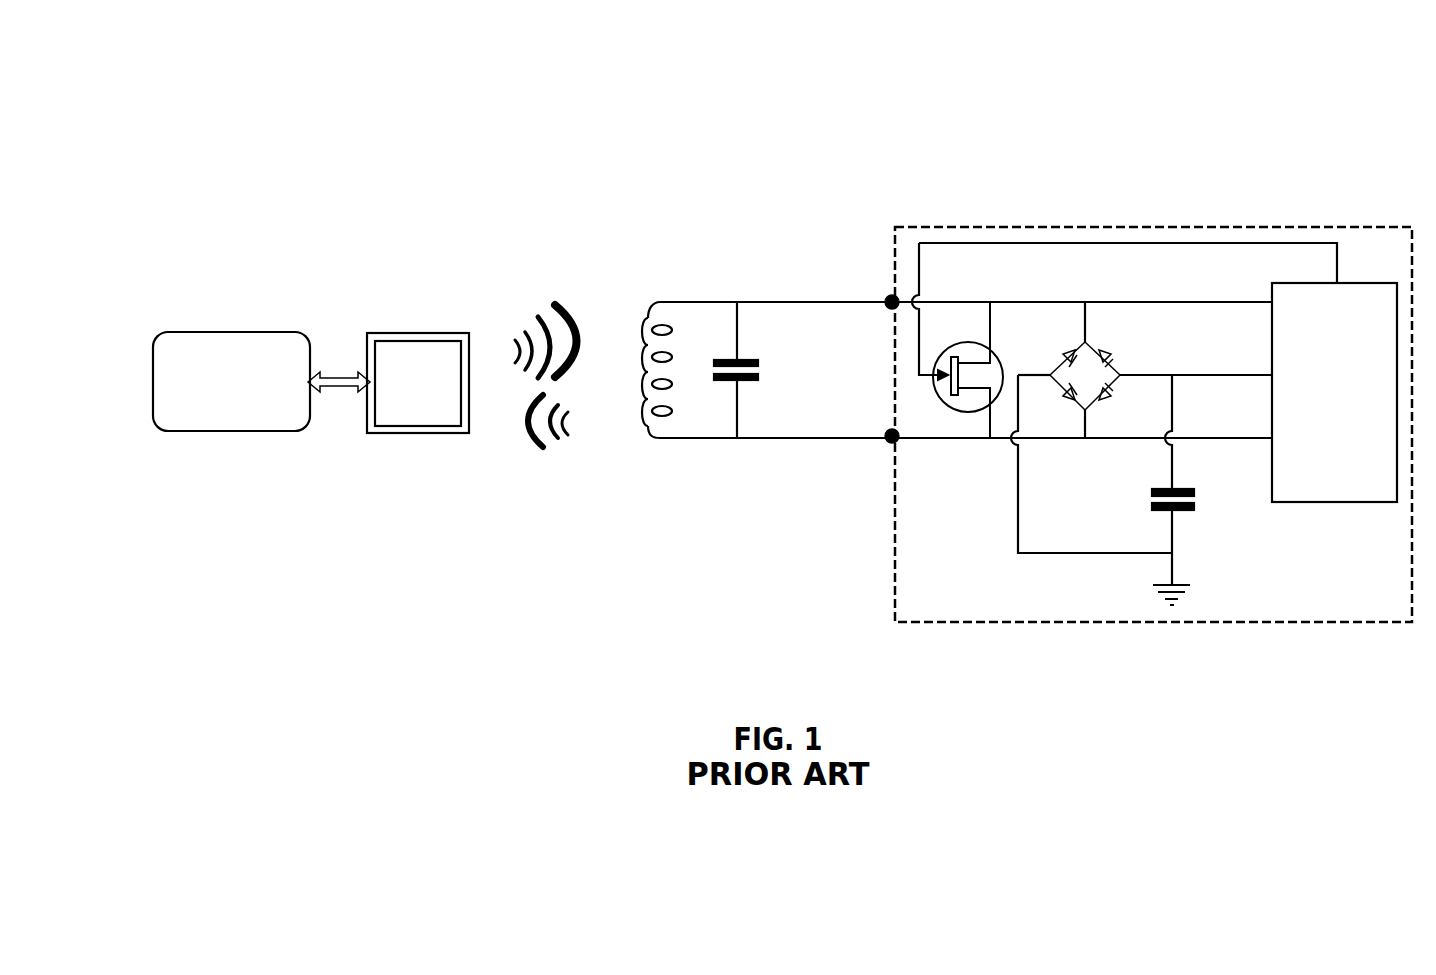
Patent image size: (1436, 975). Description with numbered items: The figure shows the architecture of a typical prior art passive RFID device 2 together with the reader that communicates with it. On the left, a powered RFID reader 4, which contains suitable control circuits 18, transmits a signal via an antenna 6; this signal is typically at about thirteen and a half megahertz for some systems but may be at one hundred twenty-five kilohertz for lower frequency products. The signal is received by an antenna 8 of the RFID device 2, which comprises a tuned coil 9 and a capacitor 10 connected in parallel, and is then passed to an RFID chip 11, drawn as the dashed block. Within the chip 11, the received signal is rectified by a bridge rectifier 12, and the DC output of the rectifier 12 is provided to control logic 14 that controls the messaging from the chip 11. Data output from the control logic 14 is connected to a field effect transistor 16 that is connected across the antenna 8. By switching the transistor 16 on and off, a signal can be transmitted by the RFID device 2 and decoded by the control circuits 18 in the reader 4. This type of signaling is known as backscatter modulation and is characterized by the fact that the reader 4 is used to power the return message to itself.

The passive RFID device 2 is at (1206, 97).
The powered RFID reader 4 is at (262, 198).
The antenna 6 is at (413, 433).
The antenna 8 is at (693, 327).
The tuned coil 9 is at (645, 317).
The capacitor 10 is at (747, 360).
The RFID chip 11 is at (917, 227).
The bridge rectifier 12 is at (1076, 345).
The control logic 14 is at (1360, 283).
The field effect transistor 16 is at (950, 407).
The control circuits 18 is at (222, 433).